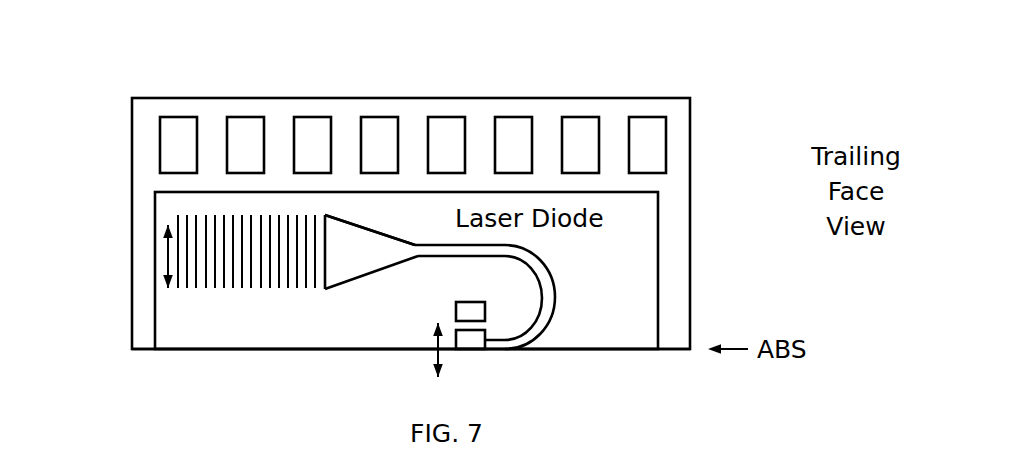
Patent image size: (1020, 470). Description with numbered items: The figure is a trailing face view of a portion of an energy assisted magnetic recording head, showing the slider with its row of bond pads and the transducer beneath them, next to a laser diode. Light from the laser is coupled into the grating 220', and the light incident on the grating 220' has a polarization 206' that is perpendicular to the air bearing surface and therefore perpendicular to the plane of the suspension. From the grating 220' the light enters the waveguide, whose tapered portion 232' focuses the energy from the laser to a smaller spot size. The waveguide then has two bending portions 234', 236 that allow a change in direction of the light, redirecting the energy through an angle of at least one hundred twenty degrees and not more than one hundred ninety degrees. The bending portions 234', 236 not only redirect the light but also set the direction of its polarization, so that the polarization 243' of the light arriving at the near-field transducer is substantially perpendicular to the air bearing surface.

The polarization 206' is at (115, 269).
The grating 220' is at (185, 284).
The tapered portion 232' is at (231, 206).
The bending portion 234' is at (398, 324).
The bending portion 236 is at (543, 337).
The polarization 243' is at (469, 355).